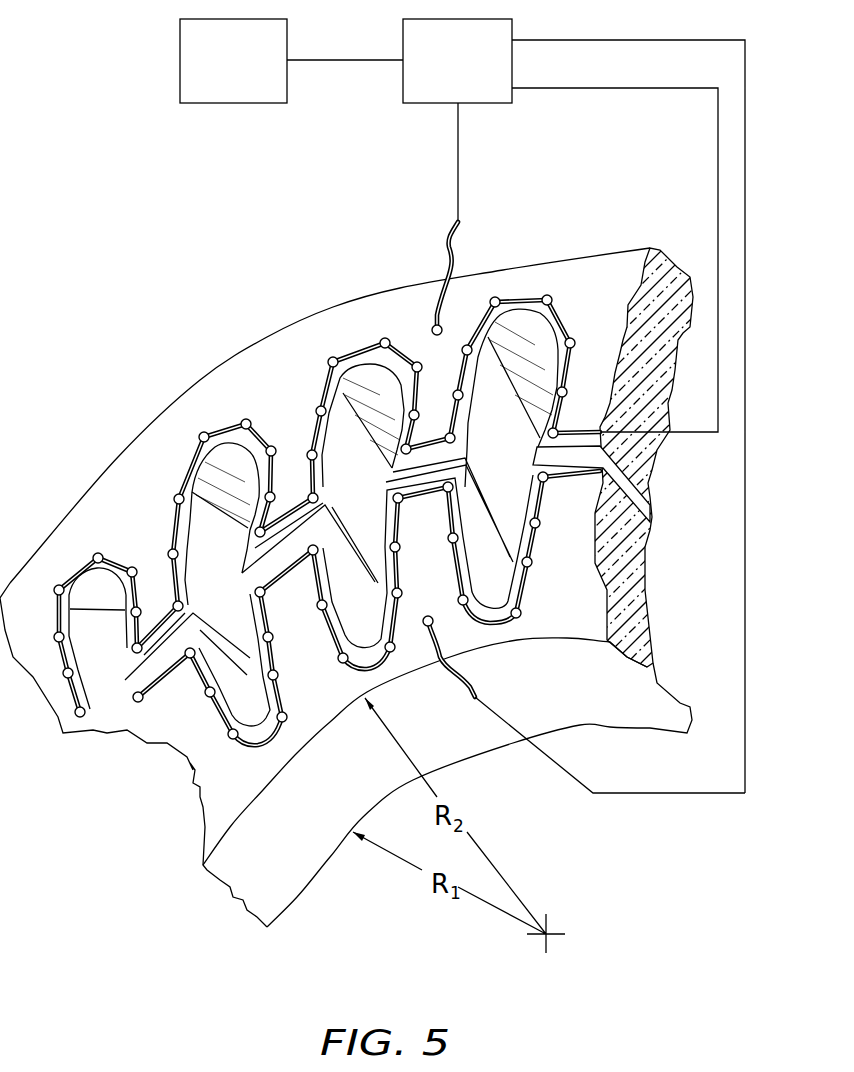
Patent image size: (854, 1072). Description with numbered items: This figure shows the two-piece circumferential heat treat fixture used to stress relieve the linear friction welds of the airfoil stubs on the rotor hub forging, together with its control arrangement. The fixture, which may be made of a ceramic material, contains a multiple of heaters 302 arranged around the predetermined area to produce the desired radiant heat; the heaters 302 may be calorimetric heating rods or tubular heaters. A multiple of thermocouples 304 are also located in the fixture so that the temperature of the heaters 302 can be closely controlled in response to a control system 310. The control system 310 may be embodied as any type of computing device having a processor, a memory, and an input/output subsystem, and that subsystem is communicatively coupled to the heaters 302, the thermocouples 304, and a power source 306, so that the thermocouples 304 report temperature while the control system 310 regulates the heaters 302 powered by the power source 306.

The heaters 302 is at (547, 297).
The thermocouples 304 is at (431, 327).
The power source 306 is at (208, 72).
The control system 310 is at (432, 72).